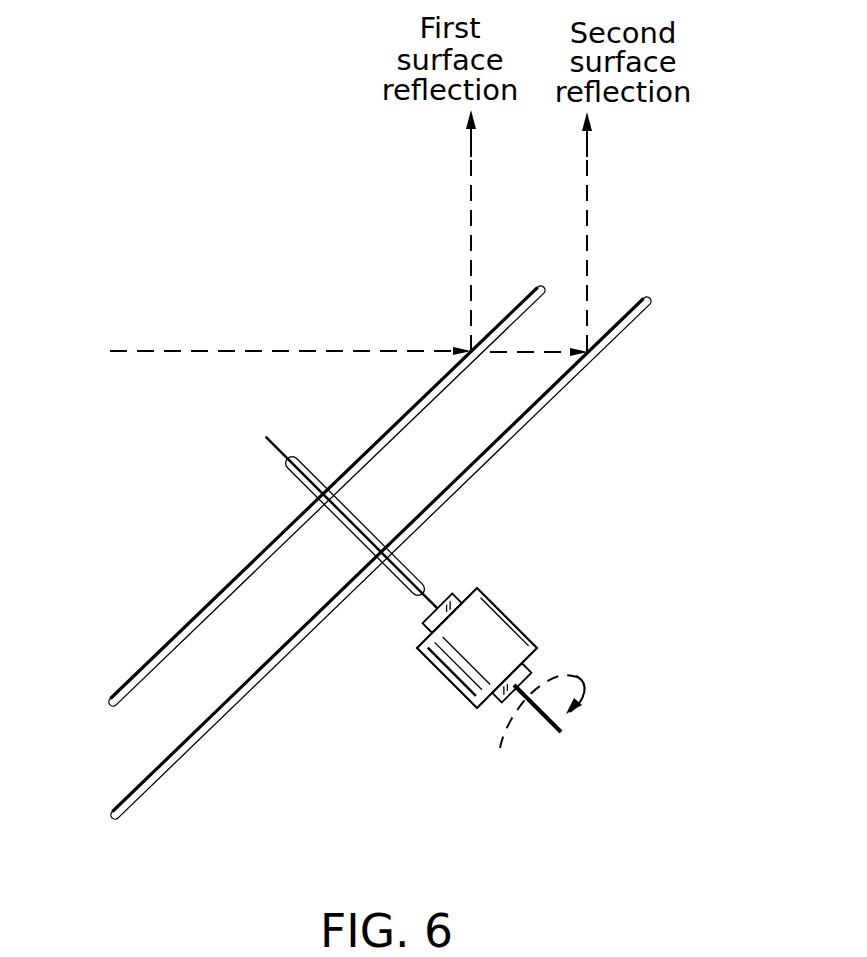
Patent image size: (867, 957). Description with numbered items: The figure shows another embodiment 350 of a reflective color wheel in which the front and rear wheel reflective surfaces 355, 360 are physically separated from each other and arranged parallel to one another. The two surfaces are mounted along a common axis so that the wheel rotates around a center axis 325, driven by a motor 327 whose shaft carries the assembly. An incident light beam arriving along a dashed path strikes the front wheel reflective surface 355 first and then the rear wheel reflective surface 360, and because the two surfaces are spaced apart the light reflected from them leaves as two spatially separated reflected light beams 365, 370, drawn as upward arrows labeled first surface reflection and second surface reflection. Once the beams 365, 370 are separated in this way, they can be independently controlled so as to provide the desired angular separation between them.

The center axis 325 is at (563, 698).
The motor 327 is at (468, 658).
The color wheel embodiment 350 is at (603, 525).
The front wheel reflective surface 355 is at (168, 635).
The rear wheel reflective surface 360 is at (142, 782).
The first reflected light beam 365 is at (470, 207).
The second reflected light beam 370 is at (588, 210).